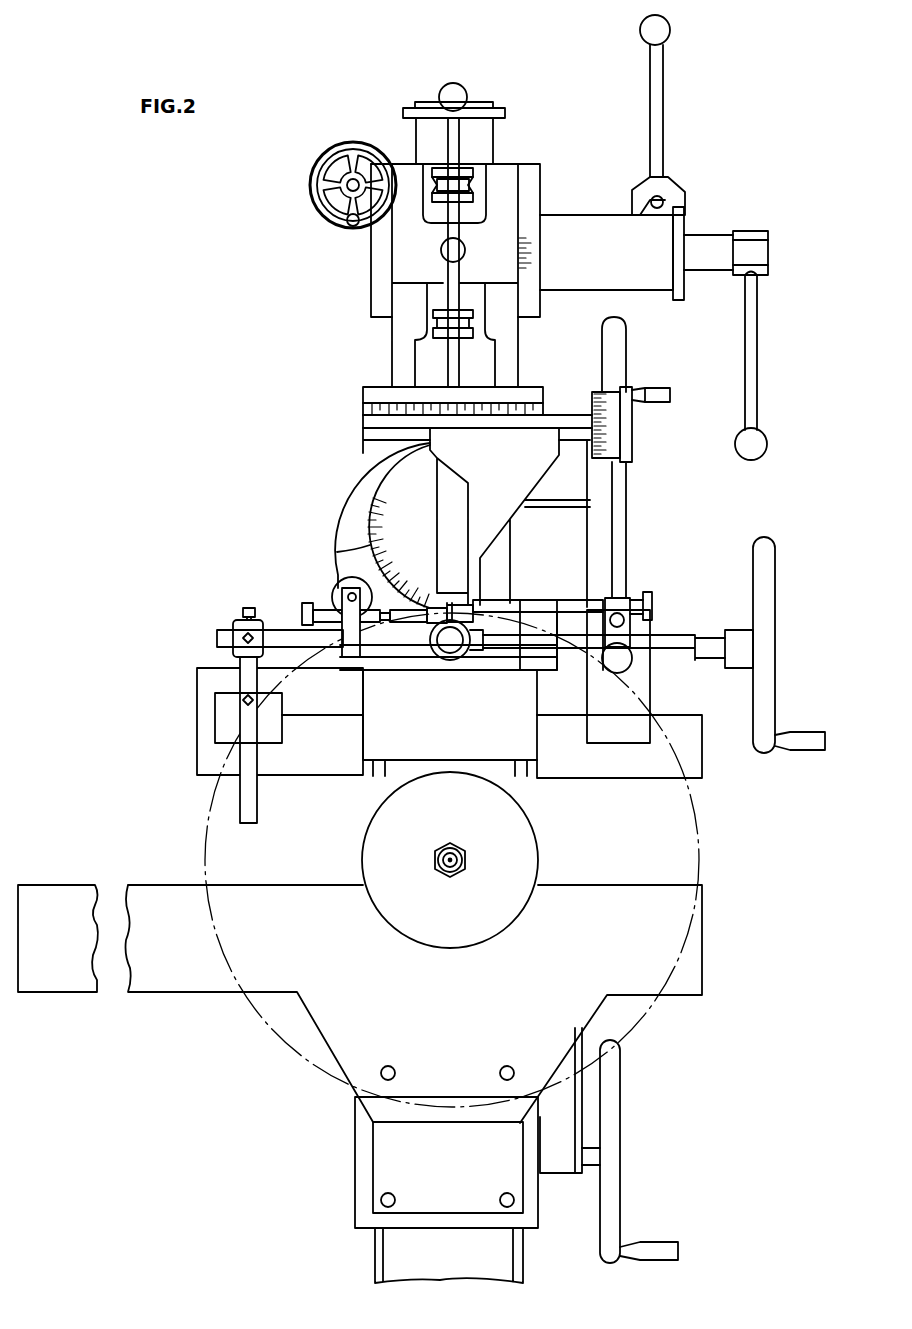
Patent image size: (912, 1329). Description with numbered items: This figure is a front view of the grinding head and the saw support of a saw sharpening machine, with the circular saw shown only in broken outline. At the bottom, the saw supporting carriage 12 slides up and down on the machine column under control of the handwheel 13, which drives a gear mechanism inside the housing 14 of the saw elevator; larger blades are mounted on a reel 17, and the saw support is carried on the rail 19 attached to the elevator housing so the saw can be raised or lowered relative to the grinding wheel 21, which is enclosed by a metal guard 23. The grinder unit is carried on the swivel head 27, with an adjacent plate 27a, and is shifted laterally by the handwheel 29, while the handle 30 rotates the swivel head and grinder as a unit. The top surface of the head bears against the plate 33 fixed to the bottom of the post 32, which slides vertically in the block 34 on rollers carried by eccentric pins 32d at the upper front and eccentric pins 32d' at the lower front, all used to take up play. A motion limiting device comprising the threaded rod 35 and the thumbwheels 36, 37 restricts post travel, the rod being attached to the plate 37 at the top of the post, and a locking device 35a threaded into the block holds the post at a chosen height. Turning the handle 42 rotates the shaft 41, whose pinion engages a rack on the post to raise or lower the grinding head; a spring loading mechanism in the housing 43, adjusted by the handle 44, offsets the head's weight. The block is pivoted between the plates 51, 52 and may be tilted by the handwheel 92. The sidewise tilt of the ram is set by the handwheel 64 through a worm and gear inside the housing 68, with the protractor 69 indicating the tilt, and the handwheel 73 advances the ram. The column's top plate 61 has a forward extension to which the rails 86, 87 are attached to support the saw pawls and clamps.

The saw supporting carriage 12 is at (335, 1058).
The handwheel 13 is at (617, 1207).
The housing of the saw elevator 14 is at (538, 1198).
The reel 17 is at (468, 865).
The rail 19 is at (693, 910).
The grinding wheel 21 is at (453, 610).
The metal guard 23 is at (462, 545).
The swivel head 27 is at (362, 433).
The pivot plate 27a is at (362, 413).
The handwheel 29 is at (627, 442).
The handle 30 is at (463, 93).
The post 32 is at (489, 153).
The eccentric pins 32d is at (455, 155).
The eccentric pins 32d' is at (438, 333).
The plate 33 is at (362, 398).
The block 34 is at (407, 258).
The threaded rod 35 is at (450, 138).
The locking device 35a is at (471, 242).
The thumbwheel 36 is at (450, 190).
The thumbwheel / plate 37 is at (505, 113).
The shaft 41 is at (712, 245).
The handle 42 is at (756, 377).
The housing 43 is at (582, 217).
The handle 44 is at (660, 135).
The plate 51 is at (530, 313).
The plate 52 is at (376, 290).
The top plate 61 is at (522, 757).
The handwheel 64 is at (767, 604).
The housing 68 is at (331, 515).
The protractor 69 is at (338, 552).
The handwheel 73 is at (623, 375).
The rail 86 is at (320, 762).
The rail 87 is at (678, 777).
The handwheel 92 is at (357, 130).